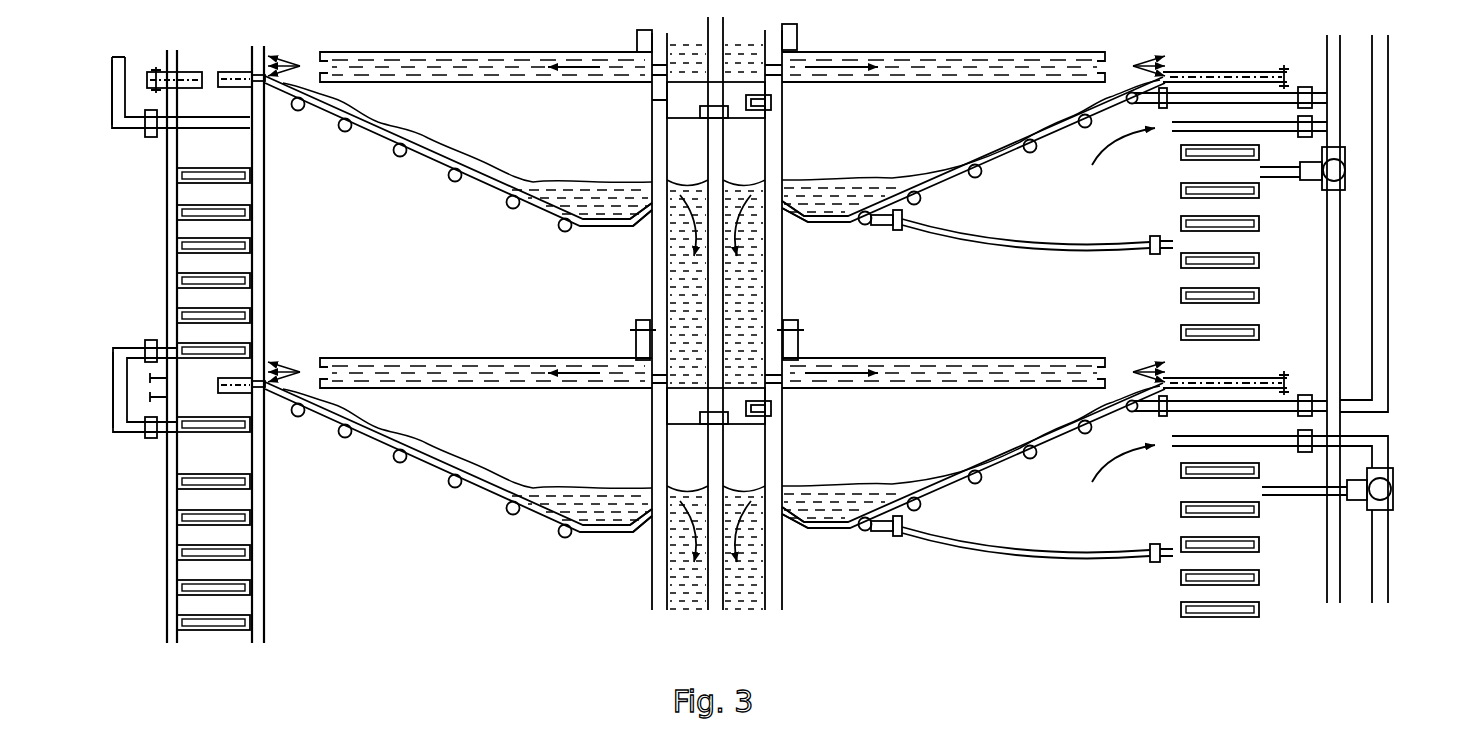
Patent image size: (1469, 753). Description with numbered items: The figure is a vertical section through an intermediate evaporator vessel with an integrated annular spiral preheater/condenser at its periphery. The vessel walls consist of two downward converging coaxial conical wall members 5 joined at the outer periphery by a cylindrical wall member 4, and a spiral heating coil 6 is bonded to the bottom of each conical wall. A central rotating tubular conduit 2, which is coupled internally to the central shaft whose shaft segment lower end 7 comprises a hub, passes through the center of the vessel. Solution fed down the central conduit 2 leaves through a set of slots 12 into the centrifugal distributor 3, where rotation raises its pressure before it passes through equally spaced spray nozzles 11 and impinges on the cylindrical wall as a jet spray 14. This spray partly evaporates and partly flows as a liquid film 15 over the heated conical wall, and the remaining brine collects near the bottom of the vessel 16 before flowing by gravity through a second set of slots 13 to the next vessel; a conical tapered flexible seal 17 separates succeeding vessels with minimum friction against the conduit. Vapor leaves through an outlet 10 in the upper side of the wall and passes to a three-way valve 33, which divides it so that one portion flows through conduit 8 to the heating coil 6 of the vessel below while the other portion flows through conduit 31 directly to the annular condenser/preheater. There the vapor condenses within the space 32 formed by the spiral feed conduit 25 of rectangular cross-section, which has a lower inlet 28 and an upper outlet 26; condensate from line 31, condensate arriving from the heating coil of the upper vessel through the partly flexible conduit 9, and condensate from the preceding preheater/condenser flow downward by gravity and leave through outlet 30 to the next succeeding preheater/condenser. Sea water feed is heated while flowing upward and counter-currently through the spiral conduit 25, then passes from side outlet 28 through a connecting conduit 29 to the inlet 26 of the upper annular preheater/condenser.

The central rotating tubular conduit 2 is at (784, 132).
The centrifugal distributor 3 is at (948, 355).
The cylindrical wall member 4 is at (266, 246).
The conical wall member 5 is at (990, 152).
The spiral heating coil 6 is at (975, 174).
The lower end of shaft segment 7 is at (680, 98).
The conduit 8 is at (1155, 108).
The conduit 9 is at (1020, 250).
The vapor outlet 10 is at (1167, 134).
The spray nozzles 11 is at (320, 353).
The slots 12 is at (641, 375).
The slots 13 is at (648, 196).
The jet spray 14 is at (273, 353).
The liquid film 15 is at (1047, 114).
The bottom of the vessel 16 is at (823, 498).
The conical tapered flexible seal 17 is at (640, 230).
The spiral feed conduit 25 is at (262, 522).
The upper outlet 26 is at (150, 140).
The lower inlet 28 is at (150, 336).
The connecting conduit 29 is at (110, 85).
The outlet 30 is at (222, 92).
The conduit 31 is at (1288, 182).
The space 32 is at (264, 503).
The three-way valve 33 is at (1350, 167).